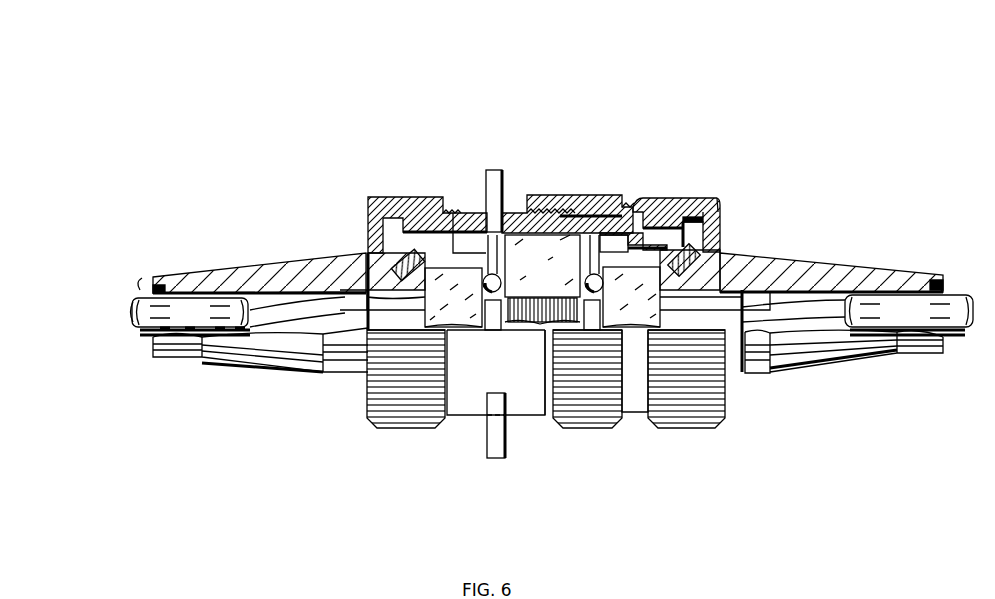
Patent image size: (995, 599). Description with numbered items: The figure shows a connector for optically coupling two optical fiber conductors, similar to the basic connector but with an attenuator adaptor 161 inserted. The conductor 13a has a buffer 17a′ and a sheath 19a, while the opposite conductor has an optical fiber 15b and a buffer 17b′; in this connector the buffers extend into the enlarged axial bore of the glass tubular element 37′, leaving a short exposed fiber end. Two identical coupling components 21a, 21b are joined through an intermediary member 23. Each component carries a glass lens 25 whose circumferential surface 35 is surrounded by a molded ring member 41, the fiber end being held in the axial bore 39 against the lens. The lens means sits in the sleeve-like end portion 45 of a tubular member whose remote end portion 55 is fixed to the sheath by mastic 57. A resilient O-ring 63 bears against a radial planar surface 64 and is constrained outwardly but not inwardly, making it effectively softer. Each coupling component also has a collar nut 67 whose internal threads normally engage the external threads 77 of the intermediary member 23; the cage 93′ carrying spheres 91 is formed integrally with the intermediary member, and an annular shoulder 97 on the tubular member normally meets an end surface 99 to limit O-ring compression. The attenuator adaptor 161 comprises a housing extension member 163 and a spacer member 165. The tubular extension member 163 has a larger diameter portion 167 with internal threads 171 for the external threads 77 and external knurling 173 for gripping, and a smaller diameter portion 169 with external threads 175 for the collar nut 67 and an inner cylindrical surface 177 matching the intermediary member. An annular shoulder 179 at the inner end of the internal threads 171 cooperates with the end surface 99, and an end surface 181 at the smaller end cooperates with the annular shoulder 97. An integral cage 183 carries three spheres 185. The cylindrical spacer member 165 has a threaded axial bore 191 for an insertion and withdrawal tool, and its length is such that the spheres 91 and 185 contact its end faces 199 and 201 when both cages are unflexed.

The optical fiber conductor 13a is at (140, 290).
The optical fiber 15b is at (663, 450).
The buffer 17a′ is at (266, 373).
The buffer 17b′ is at (843, 378).
The sheath 19a is at (133, 312).
The coupling component 21a is at (342, 212).
The coupling component 21b is at (785, 137).
The intermediary member 23 is at (487, 162).
The lens 25 is at (447, 207).
The circumferential surface 35 is at (545, 418).
The tubular element 37′ is at (350, 380).
The axial bore 39 is at (367, 270).
The ring member 41 is at (393, 198).
The sleeve-like end portion 45 is at (668, 195).
The end portion of tubular member 55 is at (180, 281).
The mastic 57 is at (152, 335).
The O-ring 63 is at (370, 258).
The radial planar surface 64 is at (773, 252).
The collar nut 67 is at (402, 420).
The external threads 77 is at (540, 212).
The spheres 91 is at (475, 258).
The cage 93′ is at (487, 180).
The annular shoulder 97 is at (720, 200).
The end surface 99 is at (621, 200).
The attenuator adaptor 161 is at (648, 88).
The housing extension member 163 is at (632, 188).
The spacer member 165 is at (558, 274).
The larger diameter portion 167 is at (550, 212).
The smaller diameter portion 169 is at (658, 205).
The internal threads 171 is at (553, 212).
The external knurling 173 is at (597, 430).
The external threads 175 is at (666, 162).
The inner cylindrical surface 177 is at (500, 200).
The annular shoulder 179 is at (613, 185).
The end surface 181 is at (682, 215).
The cage 183 is at (631, 251).
The spheres 185 is at (641, 289).
The axial bore 191 is at (530, 350).
The end face 199 is at (487, 403).
The end face 201 is at (520, 325).